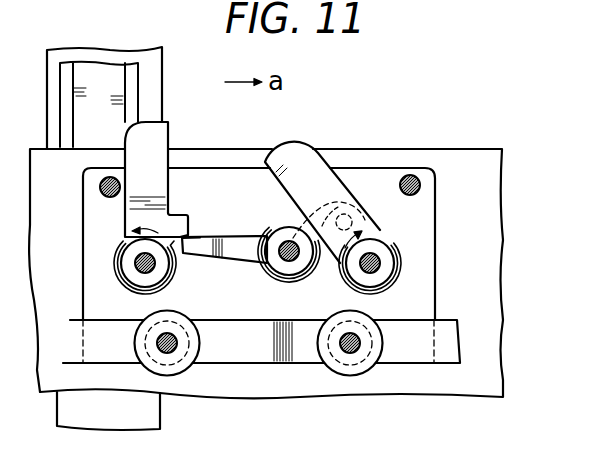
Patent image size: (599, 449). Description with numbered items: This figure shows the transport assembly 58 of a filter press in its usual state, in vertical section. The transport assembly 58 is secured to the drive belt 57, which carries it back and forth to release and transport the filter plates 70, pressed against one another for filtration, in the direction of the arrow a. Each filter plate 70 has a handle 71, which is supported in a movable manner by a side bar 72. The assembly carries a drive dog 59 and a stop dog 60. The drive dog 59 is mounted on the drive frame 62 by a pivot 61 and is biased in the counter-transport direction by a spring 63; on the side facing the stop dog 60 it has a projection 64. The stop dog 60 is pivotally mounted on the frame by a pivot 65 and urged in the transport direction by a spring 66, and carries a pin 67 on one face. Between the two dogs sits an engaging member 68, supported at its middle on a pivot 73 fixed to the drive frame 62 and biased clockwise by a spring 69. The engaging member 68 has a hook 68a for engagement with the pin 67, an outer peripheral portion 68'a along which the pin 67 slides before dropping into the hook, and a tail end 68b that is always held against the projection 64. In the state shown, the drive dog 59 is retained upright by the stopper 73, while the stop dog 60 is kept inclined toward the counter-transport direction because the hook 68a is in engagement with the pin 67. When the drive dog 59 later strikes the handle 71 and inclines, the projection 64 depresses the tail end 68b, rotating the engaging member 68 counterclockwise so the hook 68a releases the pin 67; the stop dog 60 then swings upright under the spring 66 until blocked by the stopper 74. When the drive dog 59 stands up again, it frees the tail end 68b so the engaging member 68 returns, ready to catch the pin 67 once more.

The drive belt 57 is at (230, 352).
The transport assembly 58 is at (231, 167).
The drive dog 59 is at (162, 189).
The stop dog 60 is at (317, 188).
The pivot 61 is at (138, 265).
The drive frame 62 is at (437, 249).
The spring 63 is at (177, 278).
The projection 64 is at (180, 223).
The pivot 65 is at (373, 266).
The spring 66 is at (342, 278).
The pin 67 is at (365, 222).
The engaging member 68 is at (224, 275).
The hook 68a is at (345, 212).
The outer peripheral portion 68'a is at (374, 170).
The tail end 68b is at (197, 246).
The spring 69 is at (222, 188).
The filter plate 70 is at (156, 72).
The handle 71 is at (110, 118).
The side bar 72 is at (504, 167).
The pivot / stopper 73 is at (97, 187).
The stopper 74 is at (423, 185).